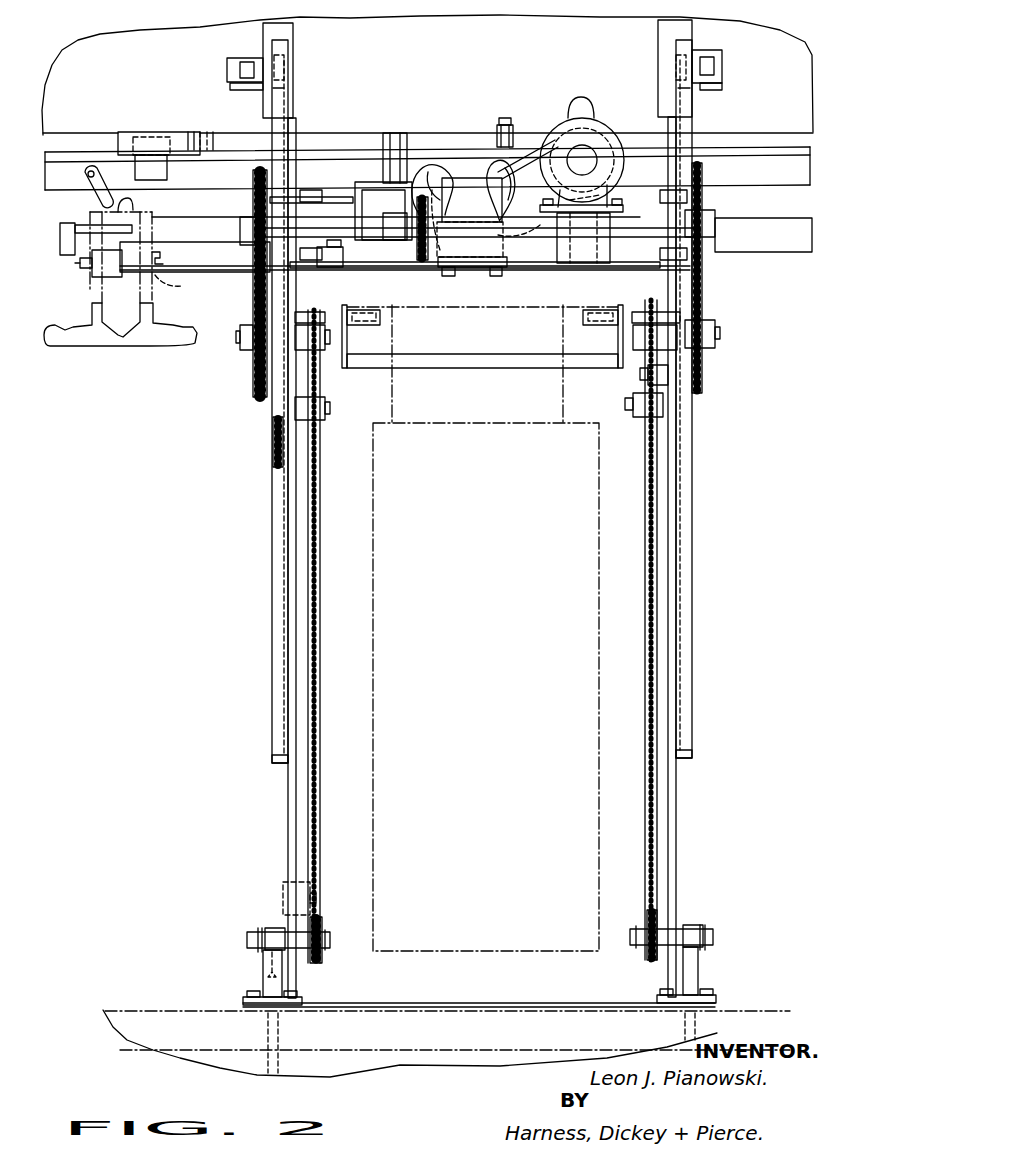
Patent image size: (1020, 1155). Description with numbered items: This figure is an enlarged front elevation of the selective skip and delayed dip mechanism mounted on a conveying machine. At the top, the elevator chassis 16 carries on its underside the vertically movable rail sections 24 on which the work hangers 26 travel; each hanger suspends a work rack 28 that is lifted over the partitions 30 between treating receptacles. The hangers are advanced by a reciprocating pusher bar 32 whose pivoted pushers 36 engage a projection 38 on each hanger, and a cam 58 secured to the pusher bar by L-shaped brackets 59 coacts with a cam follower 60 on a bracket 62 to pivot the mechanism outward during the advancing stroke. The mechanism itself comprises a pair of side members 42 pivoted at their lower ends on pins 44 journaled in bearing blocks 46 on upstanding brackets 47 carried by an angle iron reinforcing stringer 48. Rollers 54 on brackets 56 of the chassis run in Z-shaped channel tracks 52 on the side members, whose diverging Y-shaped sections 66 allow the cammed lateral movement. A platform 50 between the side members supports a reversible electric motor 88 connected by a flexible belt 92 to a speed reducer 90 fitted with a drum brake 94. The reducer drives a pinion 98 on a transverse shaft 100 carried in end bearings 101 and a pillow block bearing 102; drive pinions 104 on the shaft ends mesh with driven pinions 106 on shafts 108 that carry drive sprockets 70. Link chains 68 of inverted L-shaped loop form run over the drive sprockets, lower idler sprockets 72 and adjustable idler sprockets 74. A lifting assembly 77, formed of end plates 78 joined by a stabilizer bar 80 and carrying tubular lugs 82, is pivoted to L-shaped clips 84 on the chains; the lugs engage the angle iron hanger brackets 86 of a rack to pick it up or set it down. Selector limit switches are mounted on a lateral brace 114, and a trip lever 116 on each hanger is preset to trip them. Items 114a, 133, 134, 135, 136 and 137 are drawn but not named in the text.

The elevator chassis 16 is at (505, 38).
The vertically movable rail sections 24 is at (60, 238).
The work hangers 26 is at (70, 346).
The work racks 28 is at (392, 818).
The partitions 30 is at (288, 1045).
The pusher bar 32 is at (185, 140).
The pushers 36 is at (90, 172).
The projection 38 is at (133, 205).
The side members 42 is at (290, 792).
The pins 44 is at (246, 940).
The bearing blocks 46 is at (273, 925).
The upstanding brackets 47 is at (274, 977).
The angle iron reinforcing stringer 48 is at (435, 1018).
The platform 50 is at (535, 268).
The channel tracks 52 is at (275, 666).
The rollers 54 is at (296, 56).
The brackets 56 is at (250, 92).
The cam 58 is at (327, 133).
The L-shaped brackets 59 is at (168, 168).
The cam follower 60 is at (525, 150).
The bracket 62 is at (503, 118).
The Y-shaped sections 66 is at (290, 95).
The link chains 68 is at (318, 620).
The drive sprockets 70 is at (313, 358).
The lower idler sprockets 72 is at (323, 958).
The adjustable idler sprockets 74 is at (318, 428).
The lifting assembly 77 is at (518, 367).
The end plates 78 is at (347, 342).
The stabilizer bar 80 is at (450, 354).
The tubular lugs 82 is at (372, 312).
The L-shaped clips 84 is at (300, 302).
The angle iron hanger brackets 86 is at (530, 307).
The reversible electric motor 88 is at (598, 135).
The speed reducer 90 is at (472, 200).
The flexible belt 92 is at (520, 165).
The drum brake 94 is at (455, 175).
The pinion 98 is at (452, 255).
The transverse shaft 100 is at (560, 240).
The end bearings 101 is at (258, 222).
The pillow block bearing 102 is at (385, 220).
The drive pinions 104 is at (262, 300).
The driven pinions 106 is at (253, 372).
The shafts 108 is at (240, 340).
The lateral brace 114 is at (226, 259).
The lower beam 114a is at (510, 1052).
The trip lever 116 is at (78, 255).
The block 133 is at (338, 257).
The block 134 is at (298, 900).
The block 135 is at (668, 375).
The block 136 is at (108, 263).
The link 137 is at (187, 277).